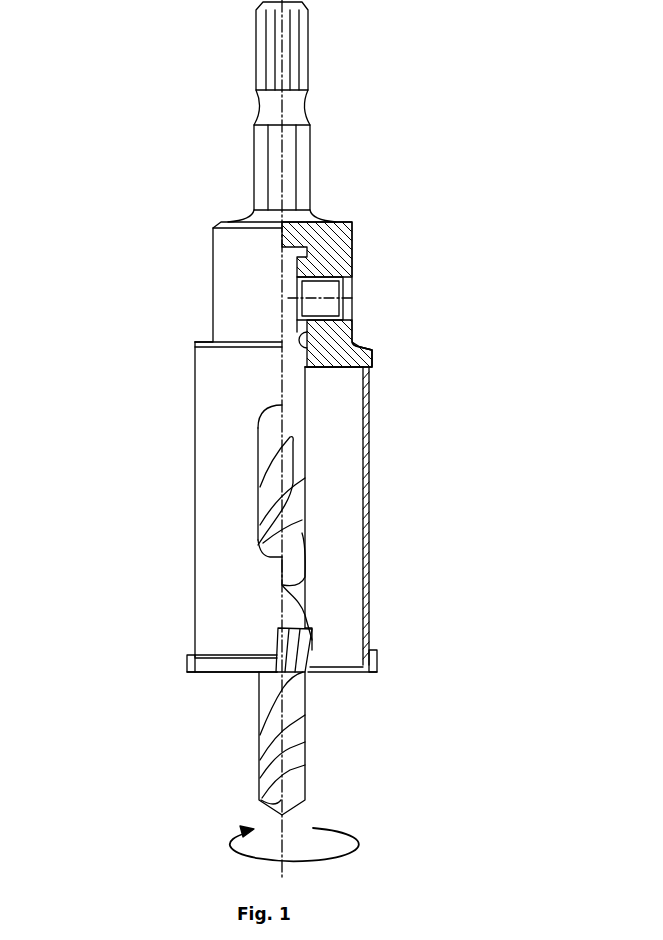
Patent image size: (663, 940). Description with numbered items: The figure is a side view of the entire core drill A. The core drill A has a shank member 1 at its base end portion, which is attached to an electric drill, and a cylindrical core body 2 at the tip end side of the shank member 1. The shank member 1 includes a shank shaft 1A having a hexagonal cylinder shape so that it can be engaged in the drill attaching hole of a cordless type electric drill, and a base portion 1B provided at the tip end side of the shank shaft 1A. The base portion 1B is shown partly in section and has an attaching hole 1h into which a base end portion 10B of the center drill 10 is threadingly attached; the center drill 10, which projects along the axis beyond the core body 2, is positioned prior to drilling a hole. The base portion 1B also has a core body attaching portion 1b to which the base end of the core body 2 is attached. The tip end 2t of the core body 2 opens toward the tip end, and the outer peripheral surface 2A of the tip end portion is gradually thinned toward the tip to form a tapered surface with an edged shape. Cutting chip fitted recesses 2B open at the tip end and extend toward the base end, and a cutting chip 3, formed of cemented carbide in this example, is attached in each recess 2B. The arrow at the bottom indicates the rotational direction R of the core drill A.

The core drill A is at (158, 93).
The shank member 1 is at (262, 162).
The shank shaft 1A is at (300, 172).
The base portion 1B is at (470, 287).
The core body attaching portion 1b is at (350, 335).
The attaching hole 1h is at (343, 356).
The base end portion of the center drill 10B is at (293, 257).
The core body 2 is at (205, 368).
The outer peripheral surface 2A is at (205, 665).
The cutting chip fitted recess 2B is at (318, 650).
The tip end of the core body 2t is at (222, 672).
The cutting chip 3 is at (292, 645).
The center drill 10 is at (296, 732).
The rotational direction R is at (347, 840).